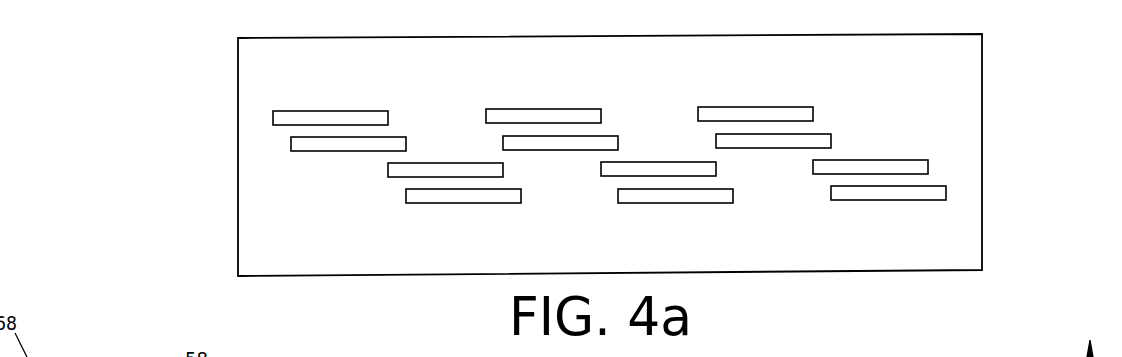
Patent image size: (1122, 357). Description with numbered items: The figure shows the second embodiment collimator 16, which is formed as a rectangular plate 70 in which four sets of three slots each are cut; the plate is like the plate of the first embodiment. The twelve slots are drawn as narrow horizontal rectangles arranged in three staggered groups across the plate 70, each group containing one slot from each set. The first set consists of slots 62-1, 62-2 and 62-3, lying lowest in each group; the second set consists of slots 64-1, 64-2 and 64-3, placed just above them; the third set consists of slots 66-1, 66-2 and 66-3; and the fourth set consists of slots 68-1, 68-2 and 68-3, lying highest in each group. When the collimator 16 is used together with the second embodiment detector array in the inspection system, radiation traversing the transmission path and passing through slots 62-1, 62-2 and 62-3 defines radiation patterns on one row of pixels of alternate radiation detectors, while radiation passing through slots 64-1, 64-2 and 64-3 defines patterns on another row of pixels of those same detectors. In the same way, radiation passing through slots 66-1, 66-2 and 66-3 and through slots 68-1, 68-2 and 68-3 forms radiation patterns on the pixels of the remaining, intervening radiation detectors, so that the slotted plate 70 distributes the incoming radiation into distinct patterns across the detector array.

The second embodiment collimator 16 is at (178, 163).
The plate 70 is at (983, 222).
The slot 68-1 is at (368, 110).
The slot 66-1 is at (355, 152).
The slot 64-1 is at (478, 163).
The slot 62-1 is at (492, 203).
The slot 68-2 is at (495, 110).
The slot 66-2 is at (610, 135).
The slot 64-2 is at (628, 160).
The slot 62-2 is at (704, 203).
The slot 68-3 is at (727, 107).
The slot 66-3 is at (832, 141).
The slot 64-3 is at (880, 160).
The slot 62-3 is at (917, 202).